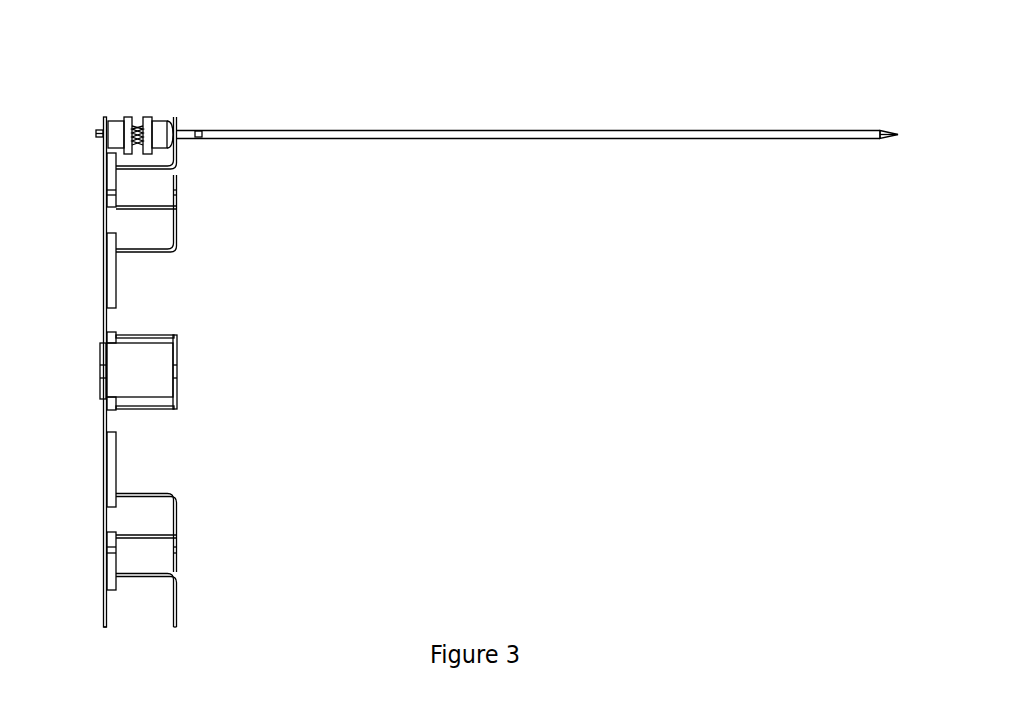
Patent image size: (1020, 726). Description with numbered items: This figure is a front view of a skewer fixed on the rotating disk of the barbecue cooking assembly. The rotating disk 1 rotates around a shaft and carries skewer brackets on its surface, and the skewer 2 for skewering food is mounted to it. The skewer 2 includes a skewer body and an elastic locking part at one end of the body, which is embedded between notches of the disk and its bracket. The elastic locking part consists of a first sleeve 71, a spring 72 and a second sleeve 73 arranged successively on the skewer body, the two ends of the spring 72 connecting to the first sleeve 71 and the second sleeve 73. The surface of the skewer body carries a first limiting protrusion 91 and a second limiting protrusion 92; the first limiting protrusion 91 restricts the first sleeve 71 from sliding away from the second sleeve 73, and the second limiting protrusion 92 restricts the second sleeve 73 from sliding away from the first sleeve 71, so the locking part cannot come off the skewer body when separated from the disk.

The rotating disk 1 is at (111, 372).
The skewer 2 is at (537, 170).
The first sleeve 71 is at (99, 97).
The spring 72 is at (160, 99).
The second sleeve 73 is at (206, 104).
The first limiting protrusion 91 is at (71, 110).
The second limiting protrusion 92 is at (253, 170).